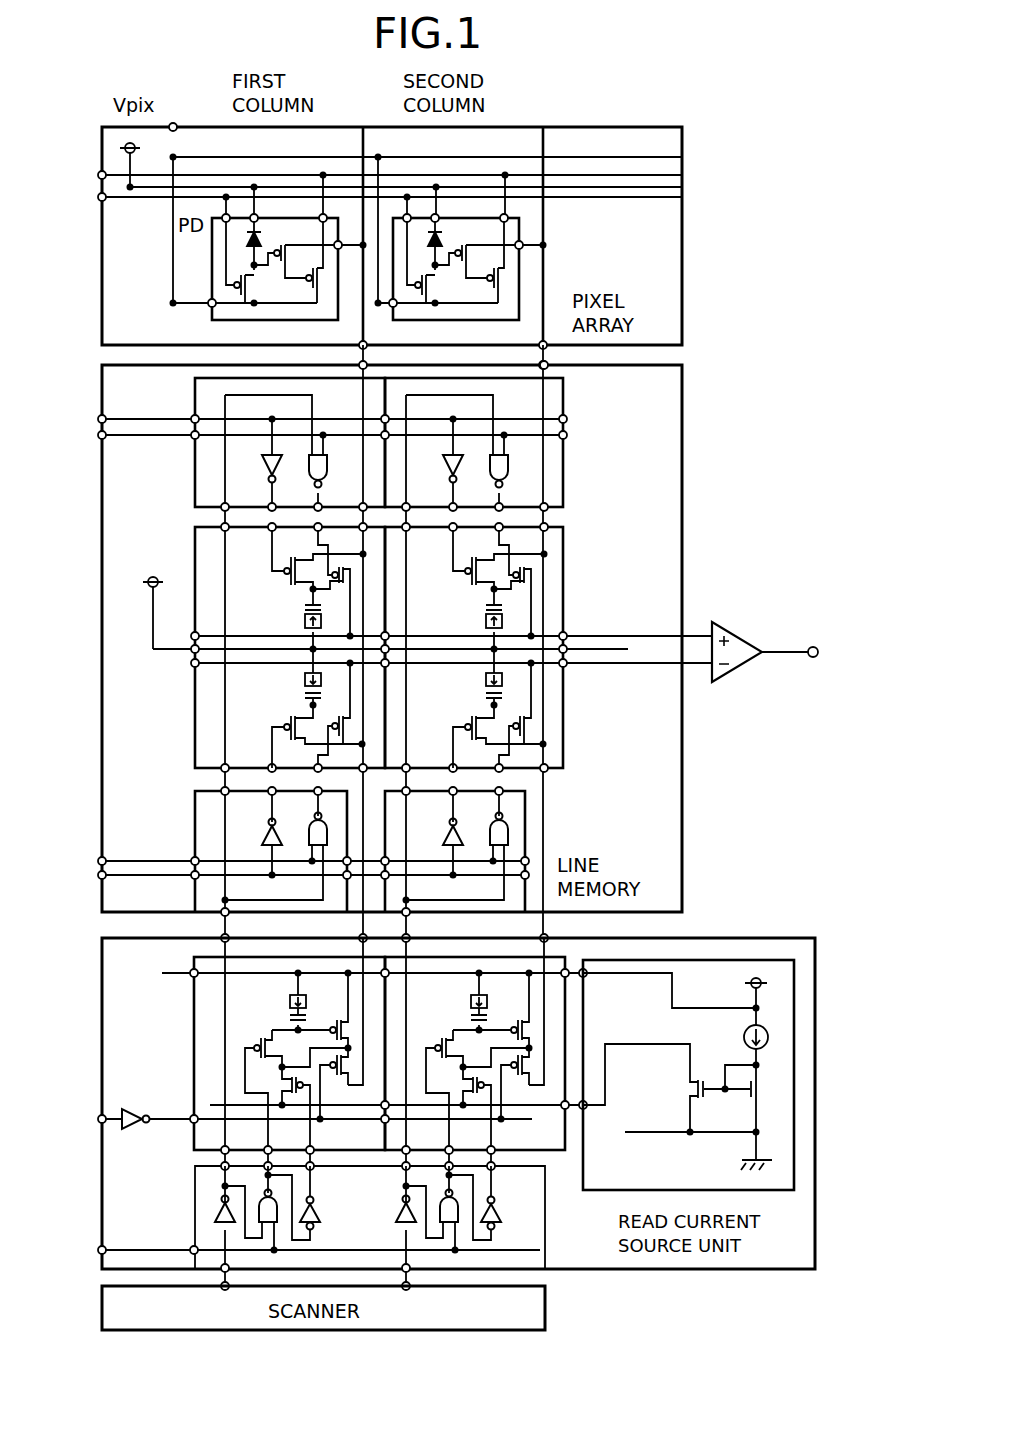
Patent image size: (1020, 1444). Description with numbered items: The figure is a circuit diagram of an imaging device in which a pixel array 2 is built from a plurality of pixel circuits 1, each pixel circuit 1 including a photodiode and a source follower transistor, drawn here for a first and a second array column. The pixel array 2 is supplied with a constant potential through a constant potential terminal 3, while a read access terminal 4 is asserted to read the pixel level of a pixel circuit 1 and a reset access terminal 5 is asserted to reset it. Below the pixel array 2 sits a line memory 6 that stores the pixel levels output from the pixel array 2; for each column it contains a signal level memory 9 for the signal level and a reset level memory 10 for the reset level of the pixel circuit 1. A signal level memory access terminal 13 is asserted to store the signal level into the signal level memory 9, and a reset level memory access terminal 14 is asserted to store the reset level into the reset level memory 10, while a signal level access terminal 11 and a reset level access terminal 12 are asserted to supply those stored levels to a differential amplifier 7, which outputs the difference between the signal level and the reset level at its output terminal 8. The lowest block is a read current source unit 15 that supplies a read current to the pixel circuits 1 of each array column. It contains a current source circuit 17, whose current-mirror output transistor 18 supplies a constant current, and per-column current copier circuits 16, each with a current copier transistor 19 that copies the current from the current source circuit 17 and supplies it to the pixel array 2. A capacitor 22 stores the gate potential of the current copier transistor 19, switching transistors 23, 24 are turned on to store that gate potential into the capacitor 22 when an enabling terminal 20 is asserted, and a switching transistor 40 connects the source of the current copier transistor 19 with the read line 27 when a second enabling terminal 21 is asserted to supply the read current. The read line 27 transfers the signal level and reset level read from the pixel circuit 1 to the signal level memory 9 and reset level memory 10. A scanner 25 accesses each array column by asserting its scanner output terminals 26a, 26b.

The pixel circuit 1 is at (212, 250).
The pixel array 2 is at (685, 316).
The constant potential terminal 3 is at (175, 124).
The read access terminal 4 is at (98, 175).
The reset access terminal 5 is at (98, 200).
The line memory 6 is at (685, 881).
The differential amplifier 7 is at (738, 626).
The output terminal 8 is at (805, 638).
The signal level memory 9 is at (300, 586).
The reset level memory 10 is at (300, 714).
The signal level access terminal 11 is at (98, 435).
The reset level access terminal 12 is at (96, 859).
The signal level memory access terminal 13 is at (96, 419).
The reset level memory access terminal 14 is at (98, 875).
The read current source unit 15 is at (740, 1270).
The current copier circuit 16 is at (192, 1012).
The current source circuit 17 is at (590, 1192).
The output transistor 18 is at (688, 1094).
The current copier transistor 19 is at (342, 1021).
The enabling terminal 20 is at (96, 1249).
The enabling terminal 21 is at (96, 1117).
The capacitor 22 is at (293, 1003).
The switching transistor 23 is at (262, 1040).
The switching transistor 24 is at (273, 1083).
The scanner 25 is at (547, 1308).
The scanner output terminal 26a is at (225, 1275).
The scanner output terminal 26b is at (406, 1275).
The read line 27 is at (360, 930).
The switching transistor 40 is at (345, 1090).